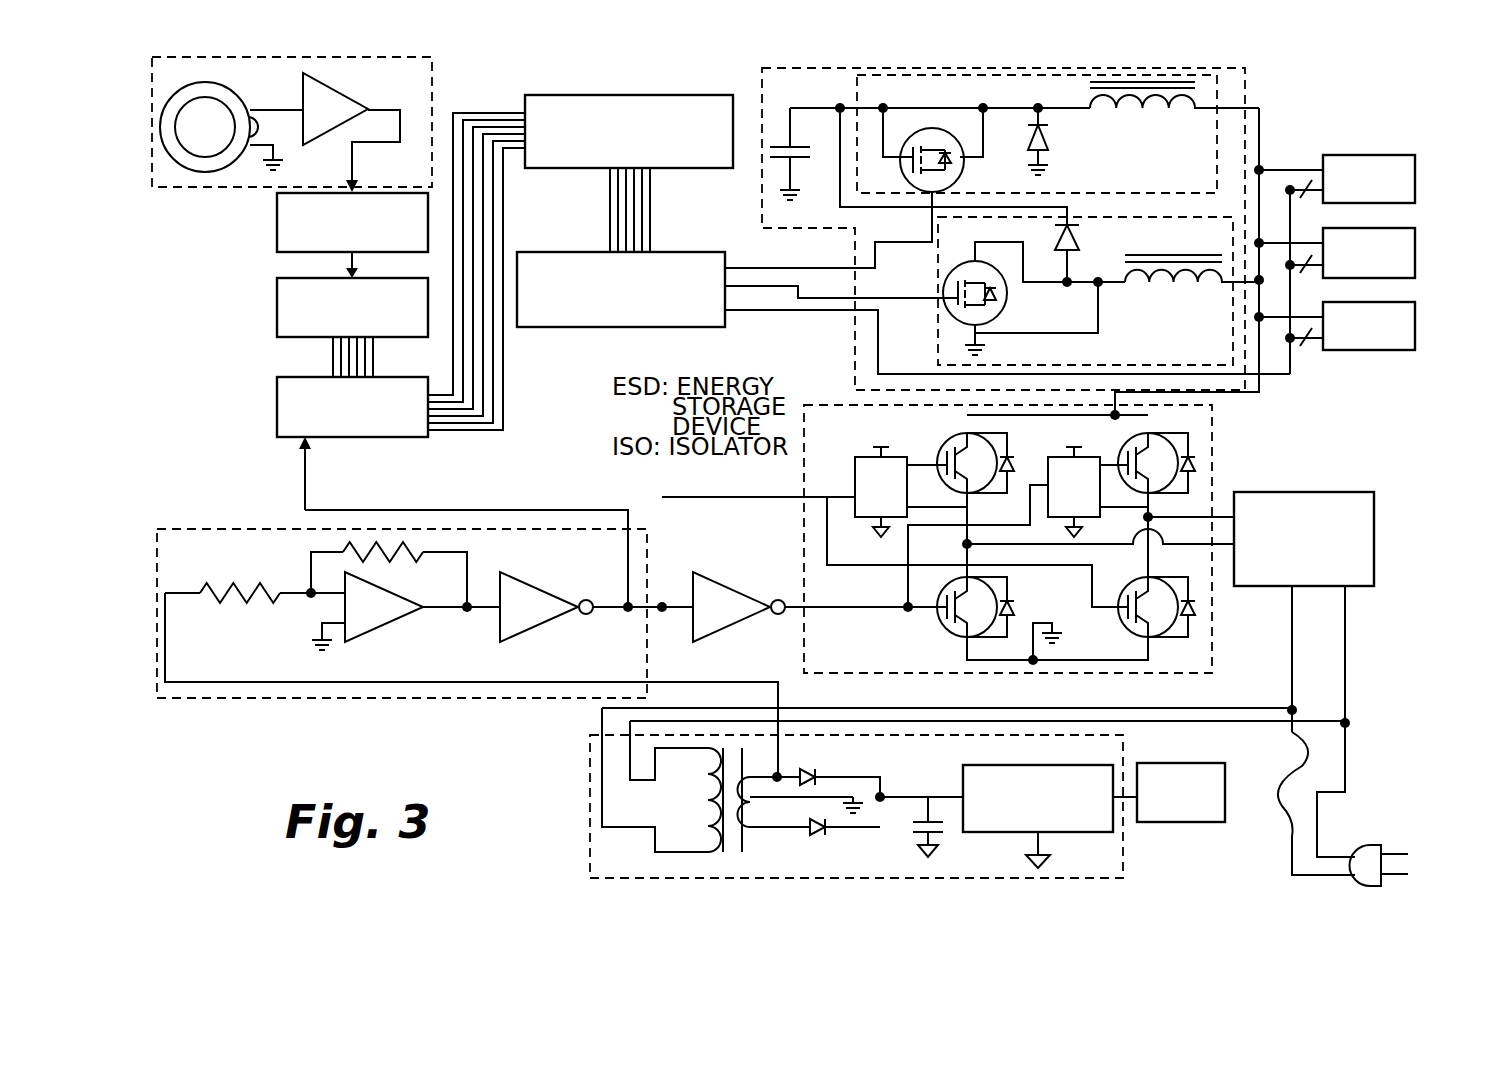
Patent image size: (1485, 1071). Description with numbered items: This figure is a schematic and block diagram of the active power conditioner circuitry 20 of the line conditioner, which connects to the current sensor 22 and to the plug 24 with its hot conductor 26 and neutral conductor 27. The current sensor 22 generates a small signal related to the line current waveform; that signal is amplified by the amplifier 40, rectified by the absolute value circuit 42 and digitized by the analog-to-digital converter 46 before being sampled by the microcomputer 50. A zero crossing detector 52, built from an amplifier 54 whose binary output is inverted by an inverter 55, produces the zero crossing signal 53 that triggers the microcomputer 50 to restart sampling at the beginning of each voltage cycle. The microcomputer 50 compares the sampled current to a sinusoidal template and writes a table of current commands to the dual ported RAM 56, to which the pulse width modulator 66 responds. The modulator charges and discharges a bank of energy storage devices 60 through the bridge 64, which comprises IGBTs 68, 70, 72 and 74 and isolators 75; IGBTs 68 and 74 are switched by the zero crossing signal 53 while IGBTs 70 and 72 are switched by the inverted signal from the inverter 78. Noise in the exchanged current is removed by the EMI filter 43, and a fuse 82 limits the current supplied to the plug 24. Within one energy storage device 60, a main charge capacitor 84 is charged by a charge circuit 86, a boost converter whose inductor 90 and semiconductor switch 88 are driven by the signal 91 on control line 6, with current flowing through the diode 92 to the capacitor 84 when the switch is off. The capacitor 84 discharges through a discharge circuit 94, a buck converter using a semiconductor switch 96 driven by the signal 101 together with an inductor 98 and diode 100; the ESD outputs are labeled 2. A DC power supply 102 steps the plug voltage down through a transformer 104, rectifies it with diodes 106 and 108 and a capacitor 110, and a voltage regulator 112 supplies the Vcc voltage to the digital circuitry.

The fluorescent lamp connection 2 is at (1304, 282).
The control line 6 is at (784, 302).
The active power conditioner circuitry 20 is at (740, 66).
The current sensor 22 is at (228, 93).
The plug 24 is at (1374, 846).
The hot conductor 26 is at (1318, 818).
The neutral conductor 27 is at (1292, 850).
The amplifier 40 is at (332, 94).
The absolute value circuit 42 is at (277, 226).
The EMI filter 43 is at (1300, 492).
The analog-to-digital converter 46 is at (277, 304).
The microcomputer 50 is at (277, 402).
The zero crossing detector 52 is at (234, 529).
The zero crossing signal 53 is at (612, 620).
The amplifier 54 is at (386, 628).
The inverter 55 is at (572, 556).
The dual ported RAM 56 is at (629, 151).
The energy storage device 60 is at (1245, 68).
The bridge 64 is at (1212, 452).
The pulse width modulator 66 is at (566, 329).
The insulated gate bipolar transistor 68 is at (950, 440).
The insulated gate bipolar transistor 70 is at (1168, 440).
The insulated gate bipolar transistor 72 is at (948, 630).
The insulated gate bipolar transistor 74 is at (1168, 640).
The isolator 75 is at (905, 529).
The inverter 78 is at (726, 592).
The fuse 82 is at (1298, 762).
The main charge capacitor 84 is at (772, 166).
The charge circuit 86 is at (1233, 332).
The semiconductor switch 88 is at (1010, 302).
The inductor 90 is at (1148, 282).
The signal 91 is at (841, 276).
The diode 92 is at (1084, 250).
The discharge circuit 94 is at (1217, 157).
The semiconductor switch 96 is at (962, 177).
The inductor 98 is at (1130, 110).
The diode 100 is at (1052, 158).
The signal 101 is at (876, 248).
The DC power supply 102 is at (590, 792).
The step-down transformer 104 is at (700, 784).
The diode 106 is at (818, 770).
The diode 108 is at (818, 838).
The capacitor 110 is at (945, 834).
The voltage regulator 112 is at (972, 765).